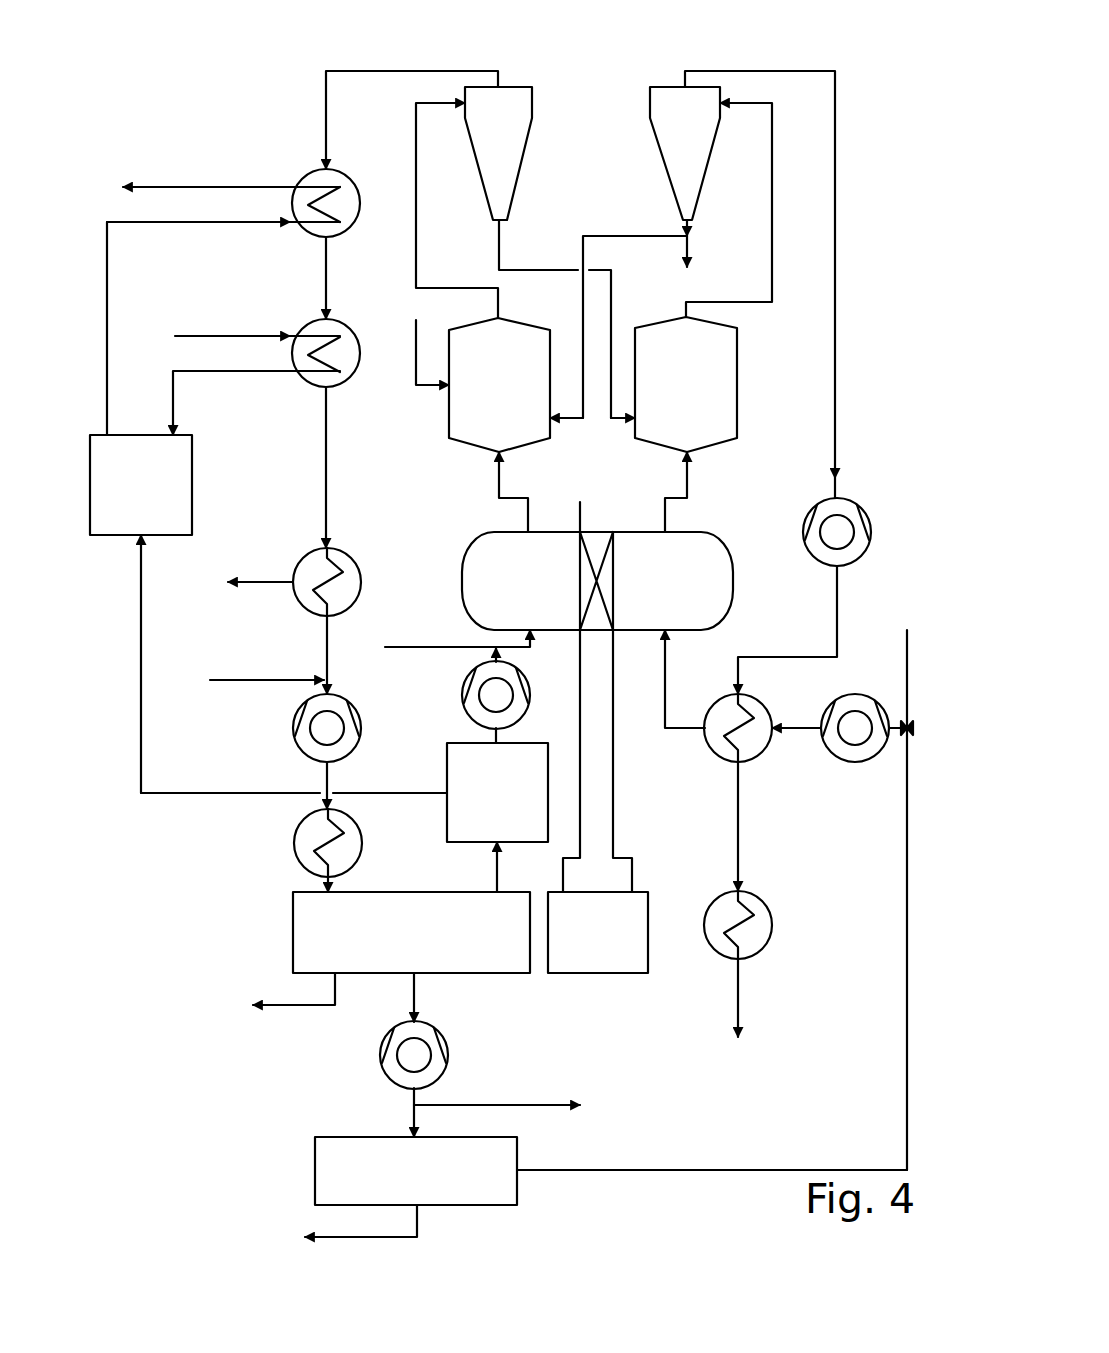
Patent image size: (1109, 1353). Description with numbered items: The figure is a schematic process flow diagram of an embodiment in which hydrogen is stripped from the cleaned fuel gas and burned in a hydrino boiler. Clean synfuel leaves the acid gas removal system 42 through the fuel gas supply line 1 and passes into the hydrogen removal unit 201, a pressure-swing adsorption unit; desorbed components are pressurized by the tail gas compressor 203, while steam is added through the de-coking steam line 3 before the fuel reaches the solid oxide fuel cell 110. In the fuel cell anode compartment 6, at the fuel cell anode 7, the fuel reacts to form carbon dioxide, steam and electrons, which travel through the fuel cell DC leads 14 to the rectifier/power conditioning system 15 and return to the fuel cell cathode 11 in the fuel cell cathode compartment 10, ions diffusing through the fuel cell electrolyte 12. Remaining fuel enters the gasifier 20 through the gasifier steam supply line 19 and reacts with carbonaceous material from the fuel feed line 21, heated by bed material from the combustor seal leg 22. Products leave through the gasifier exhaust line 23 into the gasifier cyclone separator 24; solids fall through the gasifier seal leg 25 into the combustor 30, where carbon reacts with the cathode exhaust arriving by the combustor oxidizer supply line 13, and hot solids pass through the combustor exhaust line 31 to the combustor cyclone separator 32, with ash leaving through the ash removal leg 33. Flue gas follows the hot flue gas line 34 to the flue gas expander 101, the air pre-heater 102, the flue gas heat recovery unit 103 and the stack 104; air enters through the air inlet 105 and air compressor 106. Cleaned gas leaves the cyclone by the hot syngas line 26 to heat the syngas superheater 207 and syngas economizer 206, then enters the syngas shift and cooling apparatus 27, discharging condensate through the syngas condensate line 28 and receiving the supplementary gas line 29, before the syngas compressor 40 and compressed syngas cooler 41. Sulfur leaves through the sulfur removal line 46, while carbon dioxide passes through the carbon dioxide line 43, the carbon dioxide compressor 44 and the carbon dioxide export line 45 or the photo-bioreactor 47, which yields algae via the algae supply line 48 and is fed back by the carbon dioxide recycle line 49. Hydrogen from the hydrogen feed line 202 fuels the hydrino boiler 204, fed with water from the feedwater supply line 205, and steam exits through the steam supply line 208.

The fuel gas supply line 1 is at (520, 867).
The de-coking steam line 3 is at (451, 662).
The fuel cell anode compartment 6 is at (477, 556).
The fuel cell anode 7 is at (566, 508).
The fuel cell cathode compartment 10 is at (731, 599).
The fuel cell cathode 11 is at (696, 573).
The fuel cell electrolyte 12 is at (616, 550).
The combustor oxidizer supply line 13 is at (735, 483).
The fuel cell DC leads 14 is at (634, 761).
The rectifier/power conditioning system 15 is at (598, 980).
The gasifier steam supply line 19 is at (547, 483).
The gasifier 20 is at (472, 417).
The fuel feed line 21 is at (415, 393).
The combustor seal leg 22 is at (618, 296).
The gasifier exhaust line 23 is at (457, 210).
The gasifier cyclone separator 24 is at (539, 138).
The gasifier seal leg 25 is at (567, 271).
The hot syngas line 26 is at (365, 120).
The syngas shift and cooling apparatus 27 is at (301, 535).
The syngas condensate line 28 is at (260, 543).
The supplementary gas line 29 is at (267, 711).
The combustor 30 is at (727, 384).
The combustor exhaust line 31 is at (808, 253).
The combustor cyclone separator 32 is at (782, 129).
The ash removal leg 33 is at (810, 196).
The hot flue gas line 34 is at (808, 284).
The syngas compressor 40 is at (293, 735).
The compressed syngas cooler 41 is at (269, 857).
The acid gas removal system 42 is at (347, 949).
The carbon dioxide line 43 is at (474, 1021).
The carbon dioxide compressor 44 is at (325, 1072).
The carbon dioxide export line 45 is at (540, 1129).
The sulfur removal line 46 is at (282, 1014).
The photo-bioreactor 47 is at (359, 1171).
The algae supply line 48 is at (315, 1213).
The carbon dioxide recycle line 49 is at (712, 1186).
The flue gas expander 101 is at (866, 484).
The air pre-heater 102 is at (712, 751).
The flue gas heat recovery unit 103 is at (695, 964).
The stack 104 is at (809, 1006).
The air inlet 105 is at (922, 860).
The air compressor 106 is at (844, 783).
The solid oxide fuel cell 110 is at (565, 581).
The hydrogen removal unit 201 is at (467, 809).
The hydrogen feed line 202 is at (280, 834).
The tail gas compressor 203 is at (449, 712).
The hydrino boiler 204 is at (162, 536).
The feedwater supply line 205 is at (242, 296).
The syngas economizer 206 is at (296, 322).
The syngas superheater 207 is at (286, 180).
The steam supply line 208 is at (231, 155).